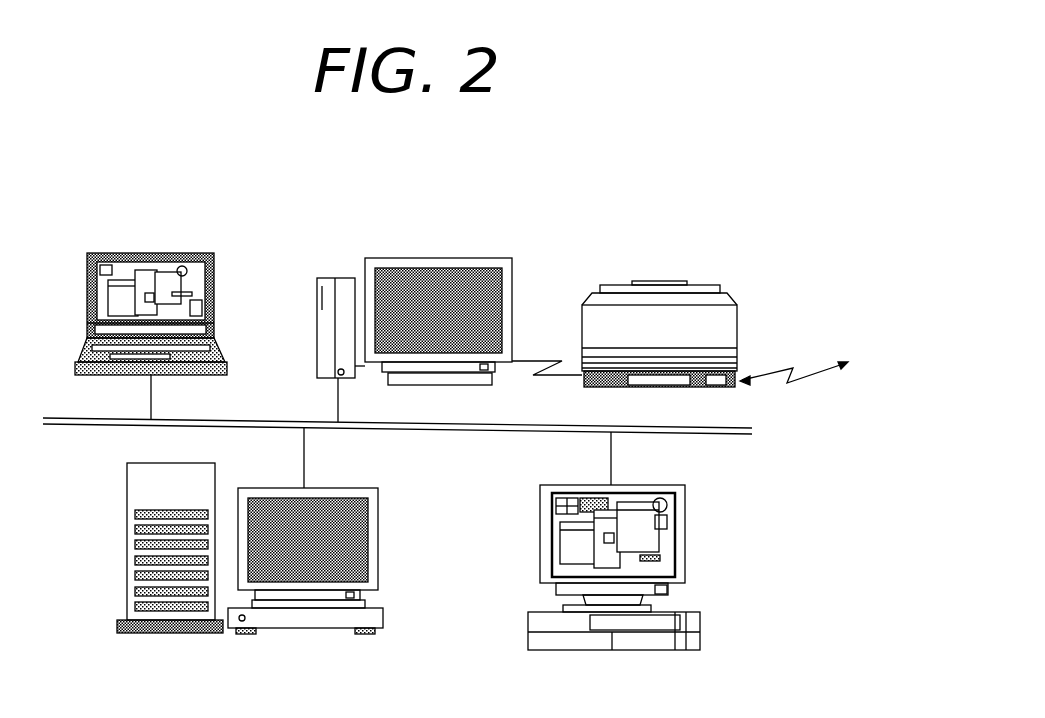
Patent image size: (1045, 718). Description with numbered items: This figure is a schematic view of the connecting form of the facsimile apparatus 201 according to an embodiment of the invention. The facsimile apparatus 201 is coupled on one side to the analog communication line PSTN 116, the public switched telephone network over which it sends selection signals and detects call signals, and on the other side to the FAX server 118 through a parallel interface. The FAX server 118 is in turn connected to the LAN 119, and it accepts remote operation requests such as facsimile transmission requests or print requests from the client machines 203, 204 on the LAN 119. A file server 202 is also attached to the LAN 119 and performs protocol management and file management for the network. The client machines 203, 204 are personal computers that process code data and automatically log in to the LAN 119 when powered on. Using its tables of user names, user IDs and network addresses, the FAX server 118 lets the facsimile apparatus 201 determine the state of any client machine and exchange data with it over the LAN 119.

The client machine 203 is at (96, 253).
The FAX server 118 is at (375, 258).
The facsimile apparatus 201 is at (590, 292).
The PSTN 116 is at (833, 357).
The LAN 119 is at (645, 427).
The file server 202 is at (224, 643).
The client machine 204 is at (603, 654).